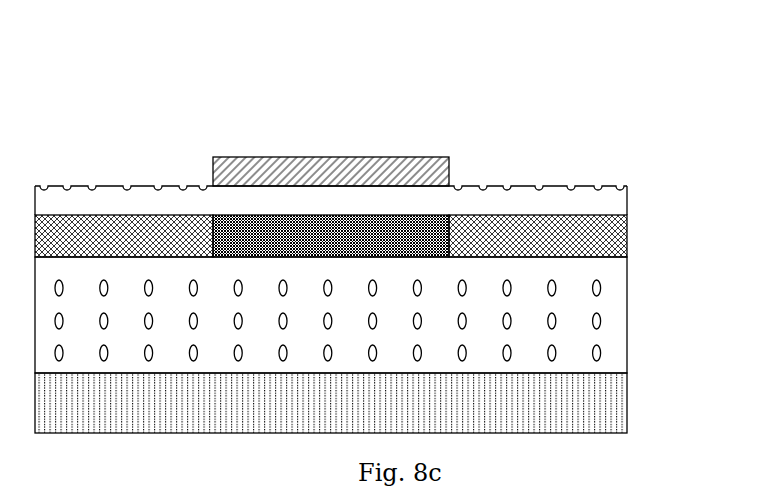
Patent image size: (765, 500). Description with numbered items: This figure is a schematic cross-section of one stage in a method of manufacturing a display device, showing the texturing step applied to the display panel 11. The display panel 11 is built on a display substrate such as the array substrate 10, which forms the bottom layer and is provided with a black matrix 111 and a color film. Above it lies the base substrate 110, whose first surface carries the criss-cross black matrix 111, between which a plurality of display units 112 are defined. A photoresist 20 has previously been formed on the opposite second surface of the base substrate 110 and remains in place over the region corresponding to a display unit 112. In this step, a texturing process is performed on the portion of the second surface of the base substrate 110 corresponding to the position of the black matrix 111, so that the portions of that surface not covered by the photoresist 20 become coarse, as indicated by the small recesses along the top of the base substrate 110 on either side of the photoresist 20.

The array substrate 10 is at (598, 400).
The display panel 11 is at (384, 139).
The base substrate 110 is at (153, 80).
The black matrix 111 is at (165, 232).
The display units 112 is at (235, 233).
The photoresist 20 is at (433, 171).